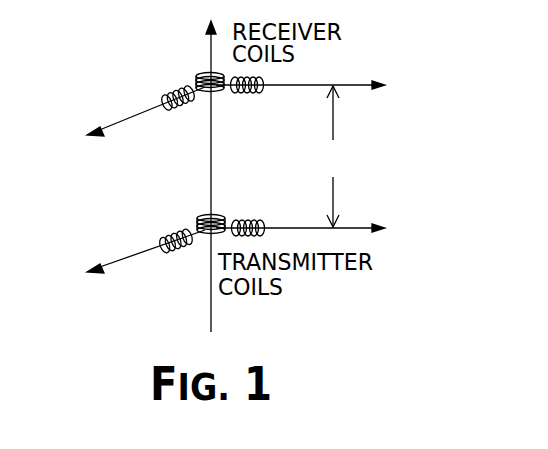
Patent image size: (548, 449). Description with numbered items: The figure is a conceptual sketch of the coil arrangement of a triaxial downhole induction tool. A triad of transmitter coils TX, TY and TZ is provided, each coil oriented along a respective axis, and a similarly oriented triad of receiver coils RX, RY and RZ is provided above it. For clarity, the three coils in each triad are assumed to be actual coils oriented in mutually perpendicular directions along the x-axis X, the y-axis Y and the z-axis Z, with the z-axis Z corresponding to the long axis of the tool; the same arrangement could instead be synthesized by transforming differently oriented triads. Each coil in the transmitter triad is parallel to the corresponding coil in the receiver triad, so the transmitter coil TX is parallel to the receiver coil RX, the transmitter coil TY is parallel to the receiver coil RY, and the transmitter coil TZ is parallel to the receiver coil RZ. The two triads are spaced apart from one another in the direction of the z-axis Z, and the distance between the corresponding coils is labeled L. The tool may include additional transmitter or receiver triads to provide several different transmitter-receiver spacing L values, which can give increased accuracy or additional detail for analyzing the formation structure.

The receiver coil RX is at (165, 96).
The receiver coil RY is at (263, 98).
The receiver coil RZ is at (202, 69).
The transmitter coil TX is at (164, 239).
The transmitter coil TY is at (262, 216).
The transmitter coil TZ is at (205, 212).
The distance between corresponding coils L is at (333, 156).
The x-axis X is at (136, 197).
The y-axis Y is at (313, 158).
The z-axis Z is at (213, 166).